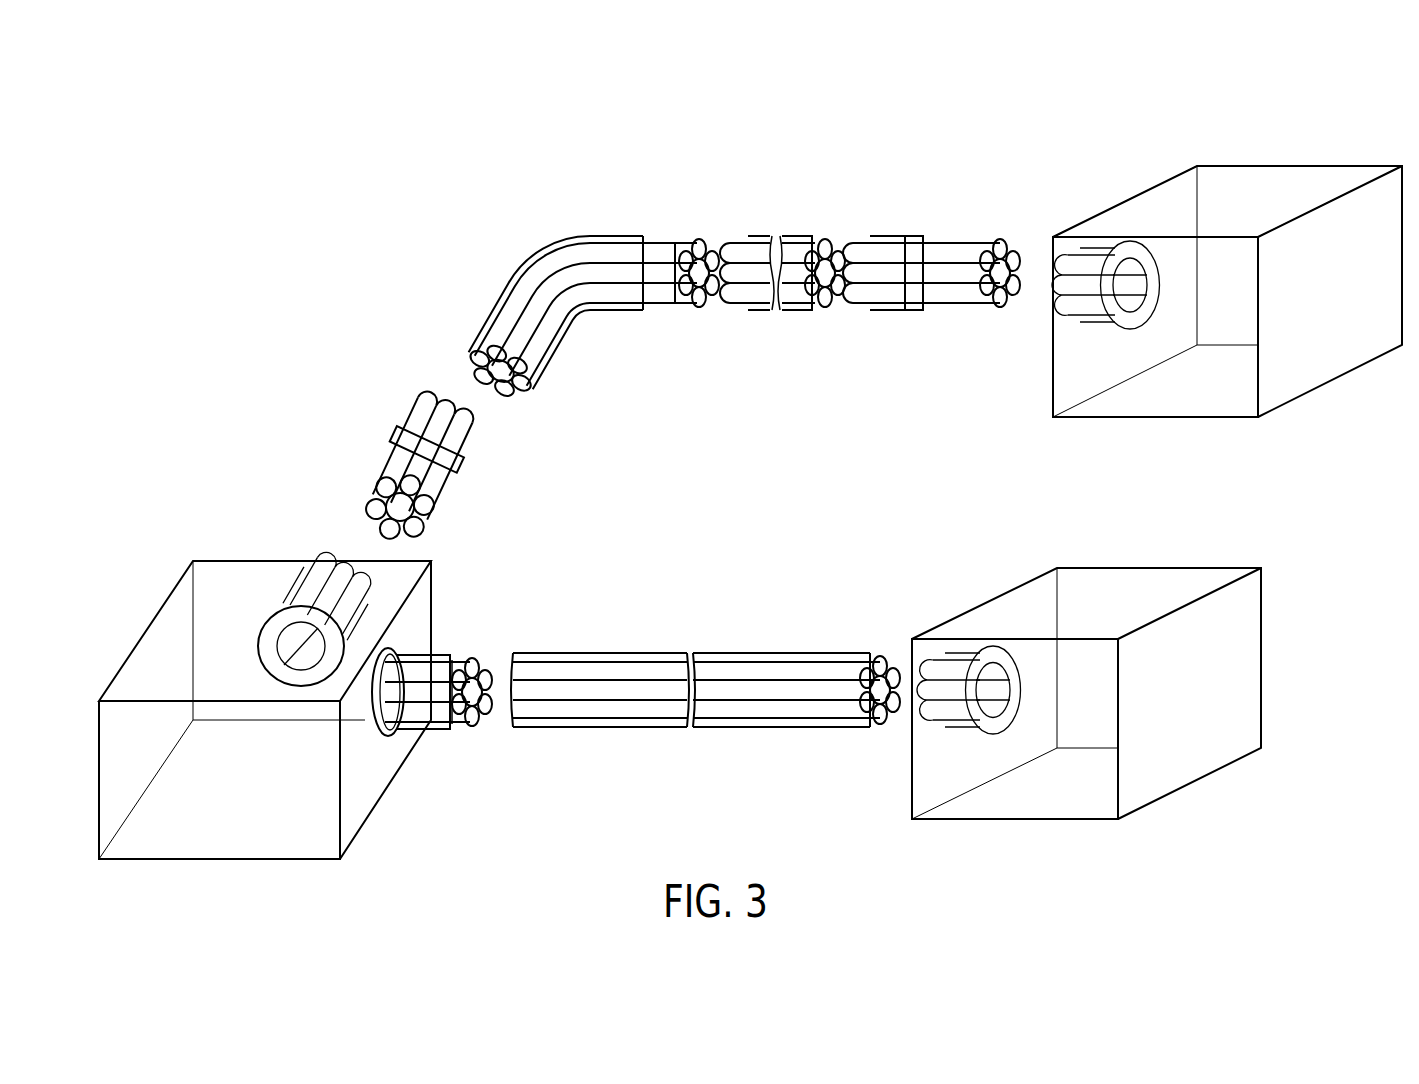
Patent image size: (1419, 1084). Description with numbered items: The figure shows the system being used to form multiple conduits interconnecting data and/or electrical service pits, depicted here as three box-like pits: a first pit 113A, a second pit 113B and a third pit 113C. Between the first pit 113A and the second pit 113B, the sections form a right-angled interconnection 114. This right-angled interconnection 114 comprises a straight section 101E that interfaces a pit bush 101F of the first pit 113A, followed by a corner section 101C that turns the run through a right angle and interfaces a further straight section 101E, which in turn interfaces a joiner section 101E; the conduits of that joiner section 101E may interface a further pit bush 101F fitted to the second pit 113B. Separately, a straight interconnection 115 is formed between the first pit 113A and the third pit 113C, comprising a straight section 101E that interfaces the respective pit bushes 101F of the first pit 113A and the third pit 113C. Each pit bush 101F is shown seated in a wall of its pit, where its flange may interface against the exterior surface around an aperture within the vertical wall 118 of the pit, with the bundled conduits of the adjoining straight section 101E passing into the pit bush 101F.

The corner section 101C is at (605, 217).
The straight section 101E is at (828, 212).
The pit bush 101F is at (1157, 210).
The first pit 113A is at (423, 555).
The second pit 113B is at (1312, 190).
The third pit 113C is at (1163, 593).
The right-angled interconnection 114 is at (782, 168).
The straight interconnection 115 is at (797, 583).
The vertical wall 118 is at (1182, 198).